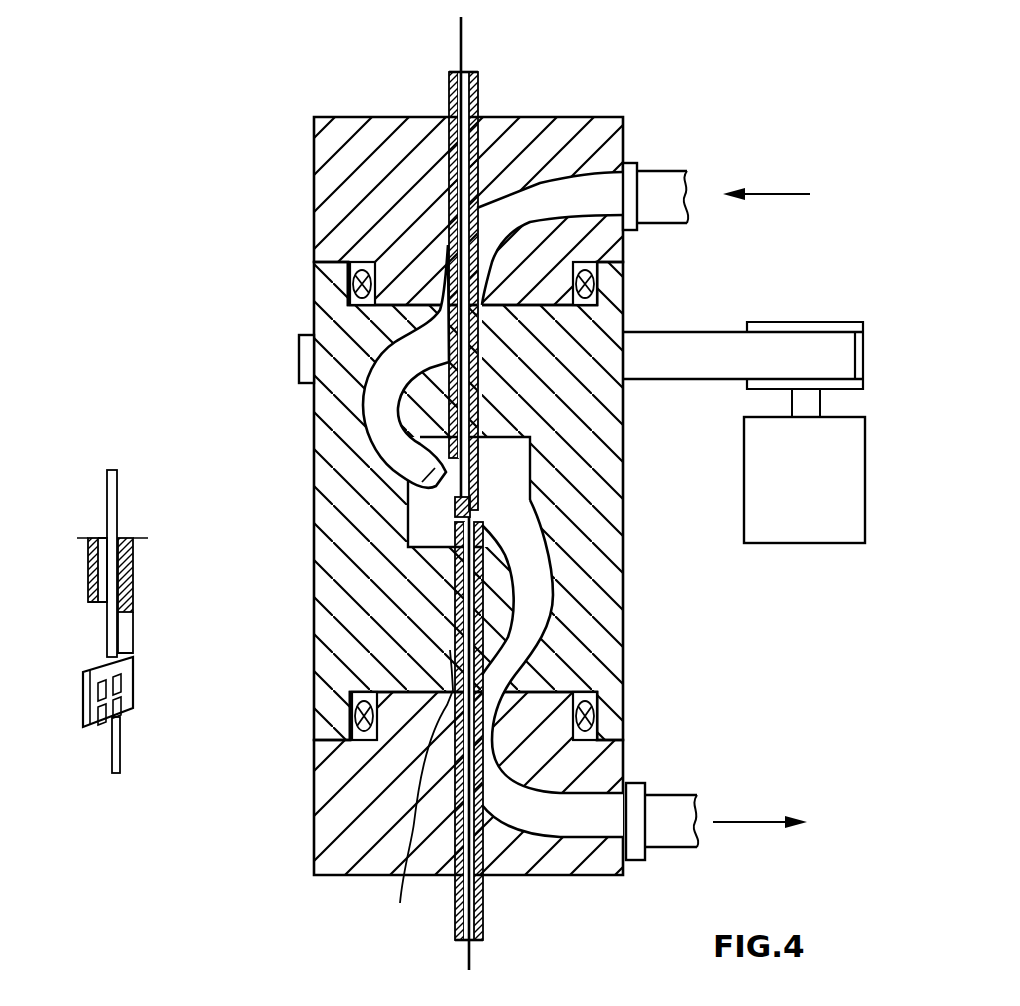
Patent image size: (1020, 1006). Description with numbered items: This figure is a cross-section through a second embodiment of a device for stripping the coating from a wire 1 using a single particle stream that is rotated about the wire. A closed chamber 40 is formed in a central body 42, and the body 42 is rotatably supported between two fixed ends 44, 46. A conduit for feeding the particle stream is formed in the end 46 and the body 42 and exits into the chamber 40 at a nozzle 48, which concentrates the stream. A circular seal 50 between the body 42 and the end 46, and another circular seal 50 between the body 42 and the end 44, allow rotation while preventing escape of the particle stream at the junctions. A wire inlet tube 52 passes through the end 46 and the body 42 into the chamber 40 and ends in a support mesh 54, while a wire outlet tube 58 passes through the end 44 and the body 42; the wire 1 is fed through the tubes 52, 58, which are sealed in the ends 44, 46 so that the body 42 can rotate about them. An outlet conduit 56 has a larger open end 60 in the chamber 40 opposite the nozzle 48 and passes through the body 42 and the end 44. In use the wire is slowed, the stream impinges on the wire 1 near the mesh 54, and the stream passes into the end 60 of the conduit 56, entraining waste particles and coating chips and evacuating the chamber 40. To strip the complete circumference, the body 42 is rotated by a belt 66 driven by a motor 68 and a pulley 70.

The wire 1 is at (461, 41).
The closed chamber 40 is at (517, 475).
The central body 42 is at (316, 557).
The end 44 is at (337, 810).
The end 46 is at (314, 157).
The nozzle 48 is at (400, 465).
The circular seal 50 is at (358, 262).
The wire inlet tube 52 is at (477, 93).
The support mesh 54 is at (436, 514).
The outlet conduit 56 is at (415, 795).
The wire outlet tube 58 is at (483, 898).
The end of outlet conduit 60 is at (507, 520).
The belt 66 is at (299, 356).
The motor 68 is at (842, 470).
The pulley 70 is at (833, 323).